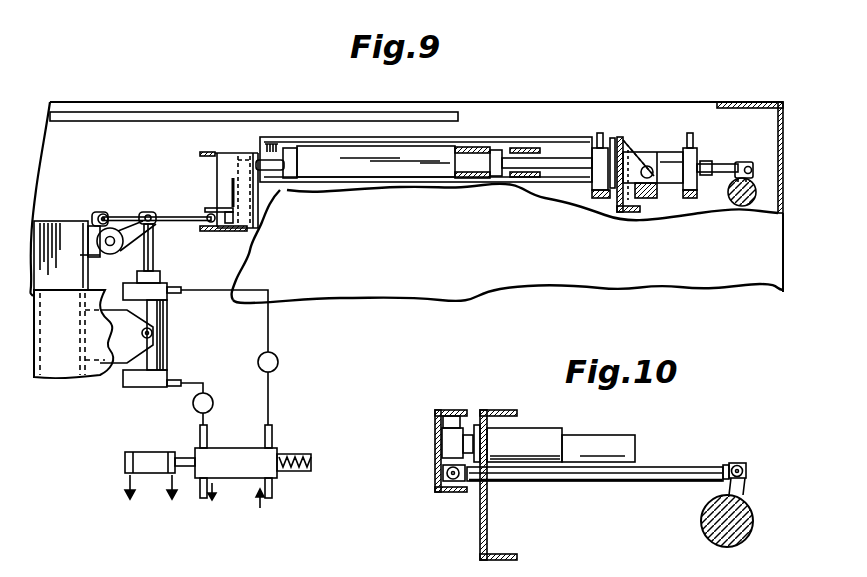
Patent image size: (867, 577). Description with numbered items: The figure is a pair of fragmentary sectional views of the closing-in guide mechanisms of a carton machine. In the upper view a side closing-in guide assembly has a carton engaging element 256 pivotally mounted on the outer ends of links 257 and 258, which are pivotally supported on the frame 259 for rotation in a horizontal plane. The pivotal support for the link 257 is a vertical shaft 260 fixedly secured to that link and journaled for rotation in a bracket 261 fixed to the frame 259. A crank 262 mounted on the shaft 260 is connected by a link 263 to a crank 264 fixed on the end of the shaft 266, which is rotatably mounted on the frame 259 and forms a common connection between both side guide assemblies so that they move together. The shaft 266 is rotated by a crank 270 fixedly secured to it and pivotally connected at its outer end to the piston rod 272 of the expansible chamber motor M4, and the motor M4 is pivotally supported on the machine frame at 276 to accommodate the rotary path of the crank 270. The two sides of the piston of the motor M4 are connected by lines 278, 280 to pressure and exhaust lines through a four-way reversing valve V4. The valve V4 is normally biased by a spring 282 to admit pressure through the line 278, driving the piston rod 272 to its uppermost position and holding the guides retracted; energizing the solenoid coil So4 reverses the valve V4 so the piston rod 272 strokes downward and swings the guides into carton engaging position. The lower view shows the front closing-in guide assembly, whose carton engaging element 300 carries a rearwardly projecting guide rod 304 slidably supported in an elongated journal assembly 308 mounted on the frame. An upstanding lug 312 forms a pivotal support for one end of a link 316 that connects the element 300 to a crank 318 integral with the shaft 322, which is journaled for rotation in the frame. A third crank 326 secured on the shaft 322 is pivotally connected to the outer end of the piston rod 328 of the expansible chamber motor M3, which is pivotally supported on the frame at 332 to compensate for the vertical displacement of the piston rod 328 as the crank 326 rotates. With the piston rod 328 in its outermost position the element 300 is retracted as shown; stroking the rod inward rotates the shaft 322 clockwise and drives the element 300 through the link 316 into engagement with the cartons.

In FIG. 9, the carton engaging element 256 is at (390, 170).
In FIG. 9, the link 257 is at (284, 183).
In FIG. 9, the link 258 is at (510, 183).
In FIG. 9, the frame 259 is at (40, 378).
In FIG. 9, the vertical shaft 260 is at (218, 172).
In FIG. 9, the bracket 261 is at (222, 135).
In FIG. 9, the crank 262 is at (212, 208).
In FIG. 9, the link 263 is at (163, 214).
In FIG. 9, the crank 264 is at (96, 214).
In FIG. 9, the shaft 266 is at (110, 252).
In FIG. 9, the crank 270 is at (137, 216).
In FIG. 9, the piston rod 272 is at (154, 248).
In FIG. 9, the pivotal support 276 is at (112, 362).
In FIG. 9, the line 278 is at (197, 413).
In FIG. 9, the line 280 is at (270, 393).
In FIG. 9, the spring 282 is at (297, 455).
In FIG. 9, the shaft 322 is at (744, 208).
In FIG. 10, the shaft 322 is at (708, 513).
In FIG. 9, the third crank 326 is at (735, 198).
In FIG. 9, the piston rod 328 is at (731, 170).
In FIG. 9, the pivotal support 332 is at (648, 150).
In FIG. 9, the expansible chamber motor M3 is at (682, 163).
In FIG. 9, the expansible chamber motor M4 is at (167, 350).
In FIG. 9, the solenoid coil So4 is at (140, 452).
In FIG. 9, the four-way reversing valve V4 is at (236, 470).
In FIG. 10, the carton engaging element 300 is at (445, 438).
In FIG. 10, the guide rod 304 is at (624, 438).
In FIG. 10, the elongated journal assembly 308 is at (534, 430).
In FIG. 10, the upstanding lug 312 is at (443, 478).
In FIG. 10, the link 316 is at (575, 483).
In FIG. 10, the crank 318 is at (746, 481).